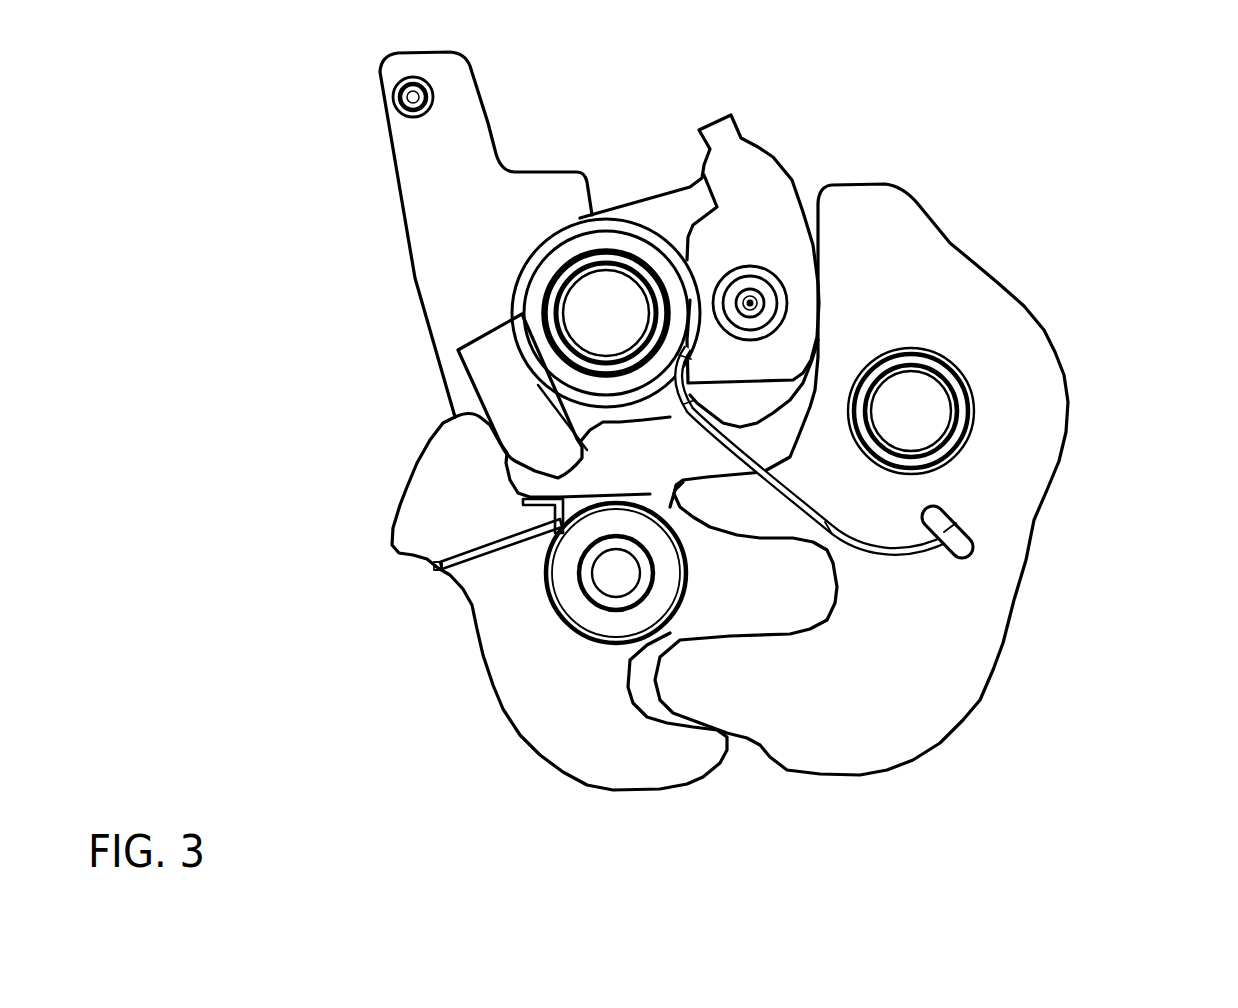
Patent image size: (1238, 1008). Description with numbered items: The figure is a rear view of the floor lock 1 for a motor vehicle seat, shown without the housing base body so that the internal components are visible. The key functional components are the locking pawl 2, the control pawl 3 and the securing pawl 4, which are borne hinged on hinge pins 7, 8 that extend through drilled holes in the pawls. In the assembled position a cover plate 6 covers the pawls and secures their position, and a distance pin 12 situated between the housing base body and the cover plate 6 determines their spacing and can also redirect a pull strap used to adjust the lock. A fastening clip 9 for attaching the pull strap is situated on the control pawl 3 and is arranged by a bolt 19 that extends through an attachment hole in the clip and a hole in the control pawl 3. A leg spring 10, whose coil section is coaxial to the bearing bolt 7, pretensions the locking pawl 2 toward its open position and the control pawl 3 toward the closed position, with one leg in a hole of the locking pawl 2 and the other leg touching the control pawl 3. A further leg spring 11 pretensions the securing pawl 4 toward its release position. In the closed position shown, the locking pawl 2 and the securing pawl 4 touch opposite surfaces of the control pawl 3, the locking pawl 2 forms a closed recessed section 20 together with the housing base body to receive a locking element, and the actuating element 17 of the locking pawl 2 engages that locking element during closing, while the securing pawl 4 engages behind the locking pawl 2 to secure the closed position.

The floor lock 1 is at (1017, 172).
The locking pawl 2 is at (1003, 432).
The control pawl 3 is at (672, 206).
The securing pawl 4 is at (565, 692).
The cover plate 6 is at (432, 193).
The hinge pin 7 is at (590, 302).
The hinge pin 8 is at (615, 572).
The fastening clip 9 is at (752, 192).
The leg spring 10 is at (903, 553).
The leg spring 11 is at (484, 553).
The distance pin 12 is at (394, 81).
The actuating element 17 is at (736, 503).
The bolt 19 is at (755, 301).
The recessed section 20 is at (743, 595).